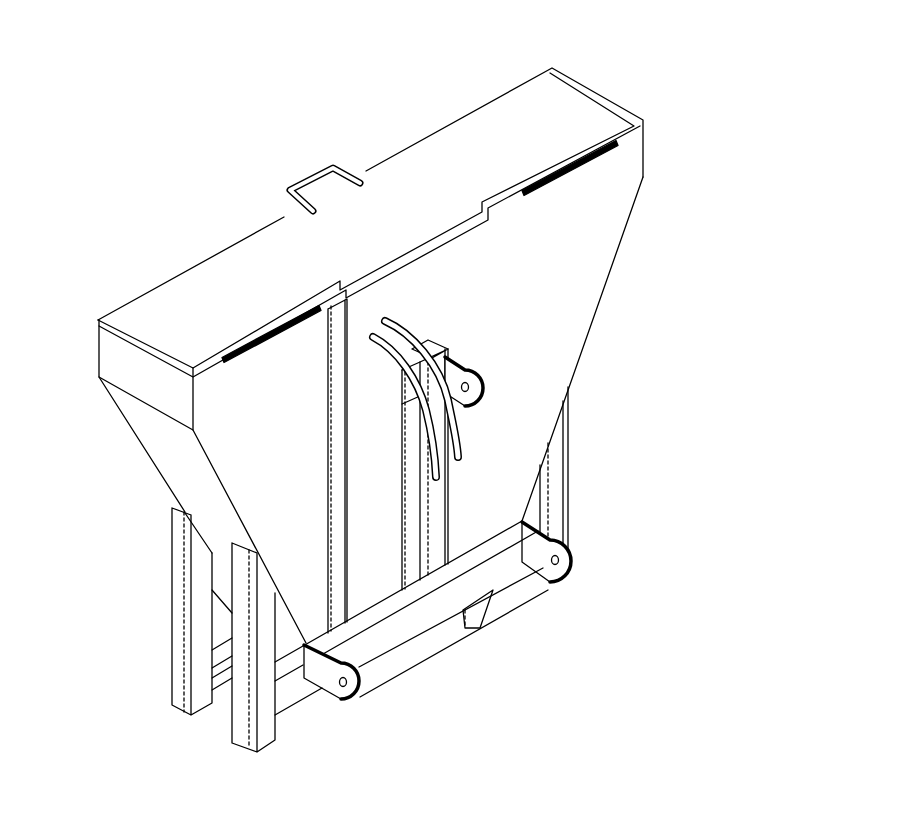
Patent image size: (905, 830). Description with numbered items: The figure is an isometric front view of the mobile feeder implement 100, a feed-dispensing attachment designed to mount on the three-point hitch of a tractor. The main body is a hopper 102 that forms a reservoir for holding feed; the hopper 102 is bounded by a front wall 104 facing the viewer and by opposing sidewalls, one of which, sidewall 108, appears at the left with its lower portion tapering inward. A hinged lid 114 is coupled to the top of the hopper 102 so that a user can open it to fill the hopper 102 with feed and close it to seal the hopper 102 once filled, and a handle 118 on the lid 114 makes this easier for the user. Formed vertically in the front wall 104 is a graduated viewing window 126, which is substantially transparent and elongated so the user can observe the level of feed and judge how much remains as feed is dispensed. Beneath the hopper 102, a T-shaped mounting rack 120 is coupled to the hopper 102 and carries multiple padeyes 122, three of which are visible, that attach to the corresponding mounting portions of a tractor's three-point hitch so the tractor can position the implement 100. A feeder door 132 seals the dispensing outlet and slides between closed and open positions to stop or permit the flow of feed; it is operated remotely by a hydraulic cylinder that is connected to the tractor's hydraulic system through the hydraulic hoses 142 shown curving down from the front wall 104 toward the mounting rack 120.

The mobile feeder implement 100 is at (703, 15).
The hopper 102 is at (616, 266).
The front wall 104 is at (615, 203).
The sidewall 108 is at (158, 458).
The hinged lid 114 is at (557, 97).
The handle 118 is at (308, 177).
The T-shaped mounting rack 120 is at (456, 526).
The padeye 122 is at (466, 364).
The graduated viewing window 126 is at (328, 398).
The feeder door 132 is at (439, 636).
The hydraulic hoses 142 is at (411, 333).